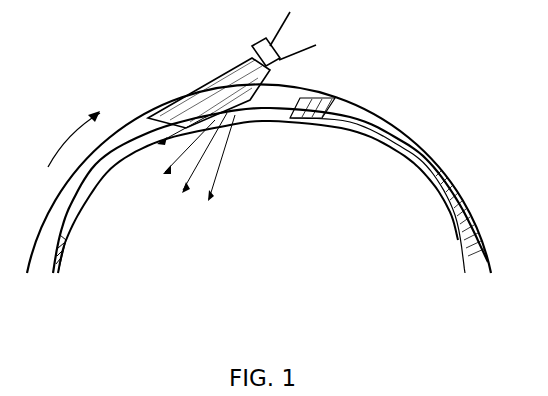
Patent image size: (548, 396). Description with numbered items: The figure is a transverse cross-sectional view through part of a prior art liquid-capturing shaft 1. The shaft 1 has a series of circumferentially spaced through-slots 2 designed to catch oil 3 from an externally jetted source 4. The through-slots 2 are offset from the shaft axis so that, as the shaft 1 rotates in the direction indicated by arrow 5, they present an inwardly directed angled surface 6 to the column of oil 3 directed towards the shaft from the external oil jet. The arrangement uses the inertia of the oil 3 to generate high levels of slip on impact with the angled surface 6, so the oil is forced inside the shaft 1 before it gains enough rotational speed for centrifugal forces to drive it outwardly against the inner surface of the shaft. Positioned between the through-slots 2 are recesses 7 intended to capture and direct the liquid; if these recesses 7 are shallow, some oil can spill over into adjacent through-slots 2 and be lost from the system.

The liquid-capturing shaft 1 is at (338, 86).
The through-slots 2 is at (276, 90).
The oil 3 is at (246, 67).
The externally jetted source 4 is at (272, 36).
The arrow 5 is at (60, 147).
The inwardly directed angled surface 6 is at (234, 108).
The recesses 7 is at (103, 186).